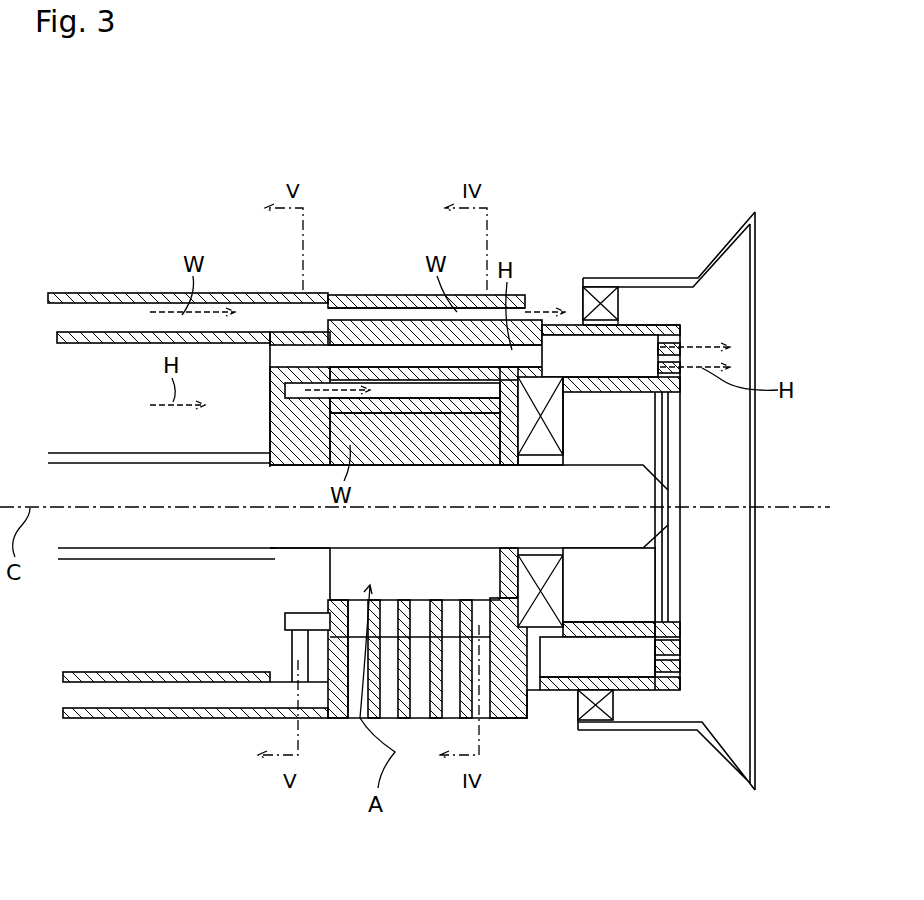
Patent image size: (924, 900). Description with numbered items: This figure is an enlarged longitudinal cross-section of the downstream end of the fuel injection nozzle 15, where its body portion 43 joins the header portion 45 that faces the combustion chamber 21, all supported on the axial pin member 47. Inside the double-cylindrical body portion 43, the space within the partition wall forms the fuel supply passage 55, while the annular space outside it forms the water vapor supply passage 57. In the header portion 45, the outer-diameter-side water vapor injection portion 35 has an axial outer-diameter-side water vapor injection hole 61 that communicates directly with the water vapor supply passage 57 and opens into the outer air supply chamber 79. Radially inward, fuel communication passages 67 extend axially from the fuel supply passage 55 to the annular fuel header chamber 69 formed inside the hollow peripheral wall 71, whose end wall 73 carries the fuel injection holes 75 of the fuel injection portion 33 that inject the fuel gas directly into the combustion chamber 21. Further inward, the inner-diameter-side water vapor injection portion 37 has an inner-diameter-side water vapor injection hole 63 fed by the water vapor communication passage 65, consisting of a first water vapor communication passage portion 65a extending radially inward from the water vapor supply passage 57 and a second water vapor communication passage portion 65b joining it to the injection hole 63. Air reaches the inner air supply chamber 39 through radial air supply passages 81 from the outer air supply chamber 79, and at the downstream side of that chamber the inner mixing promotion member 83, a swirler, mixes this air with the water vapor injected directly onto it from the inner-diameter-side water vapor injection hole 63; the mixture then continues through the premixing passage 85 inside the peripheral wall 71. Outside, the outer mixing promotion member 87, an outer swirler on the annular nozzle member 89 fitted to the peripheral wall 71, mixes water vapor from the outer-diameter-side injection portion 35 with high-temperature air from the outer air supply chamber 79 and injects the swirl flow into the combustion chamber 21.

The fuel injection nozzle 15 is at (148, 168).
The body portion 43 is at (95, 293).
The water vapor supply passage 57 is at (122, 318).
The fuel supply passage 55 is at (120, 411).
The outer-diameter-side water vapor injection portion 35 is at (525, 293).
The outer-diameter-side water vapor injection hole 61 is at (387, 312).
The fuel communication passage 67 is at (357, 355).
The inner-diameter-side water vapor injection hole 63 is at (387, 397).
The inner air supply chamber 39 is at (368, 578).
The air supply passage 81 is at (352, 705).
The water vapor communication passage 65 is at (241, 631).
The first water vapor communication passage portion 65a is at (298, 643).
The second water vapor communication passage portion 65b is at (282, 617).
The inner-diameter-side water vapor injection portion 37 is at (442, 410).
The pin member 47 is at (640, 462).
The fuel header chamber 69 is at (617, 370).
The end wall 73 is at (678, 343).
The fuel injection hole 75 is at (677, 362).
The inner mixing promotion member 83 is at (552, 424).
The premixing passage 85 is at (620, 604).
The fuel injection portion 33 is at (692, 693).
The header portion 45 is at (655, 325).
The combustion chamber 21 is at (832, 477).
The annular nozzle member 89 is at (713, 750).
The outer mixing promotion member 87 is at (602, 297).
The peripheral wall 71 is at (634, 705).
The outer air supply chamber 79 is at (597, 179).